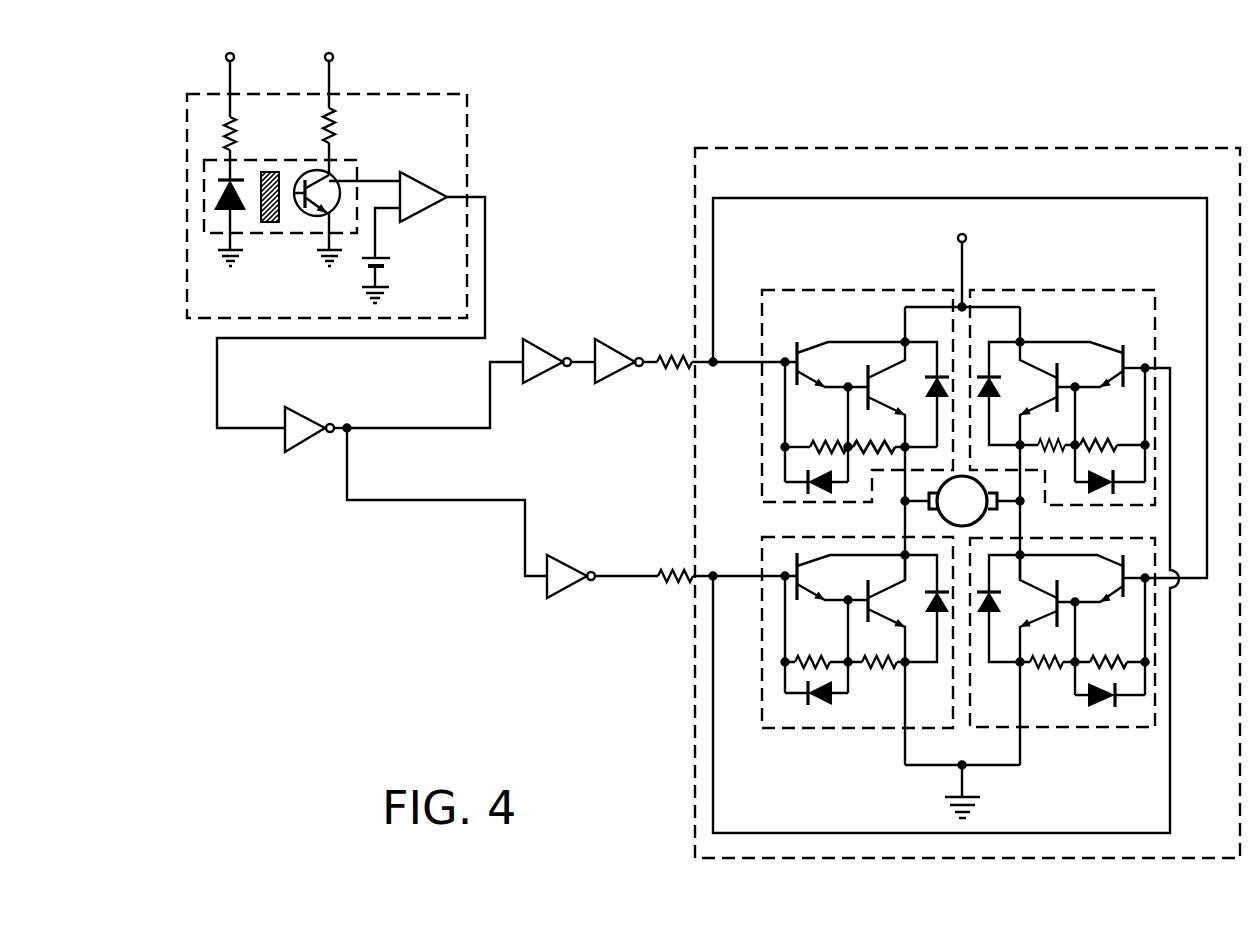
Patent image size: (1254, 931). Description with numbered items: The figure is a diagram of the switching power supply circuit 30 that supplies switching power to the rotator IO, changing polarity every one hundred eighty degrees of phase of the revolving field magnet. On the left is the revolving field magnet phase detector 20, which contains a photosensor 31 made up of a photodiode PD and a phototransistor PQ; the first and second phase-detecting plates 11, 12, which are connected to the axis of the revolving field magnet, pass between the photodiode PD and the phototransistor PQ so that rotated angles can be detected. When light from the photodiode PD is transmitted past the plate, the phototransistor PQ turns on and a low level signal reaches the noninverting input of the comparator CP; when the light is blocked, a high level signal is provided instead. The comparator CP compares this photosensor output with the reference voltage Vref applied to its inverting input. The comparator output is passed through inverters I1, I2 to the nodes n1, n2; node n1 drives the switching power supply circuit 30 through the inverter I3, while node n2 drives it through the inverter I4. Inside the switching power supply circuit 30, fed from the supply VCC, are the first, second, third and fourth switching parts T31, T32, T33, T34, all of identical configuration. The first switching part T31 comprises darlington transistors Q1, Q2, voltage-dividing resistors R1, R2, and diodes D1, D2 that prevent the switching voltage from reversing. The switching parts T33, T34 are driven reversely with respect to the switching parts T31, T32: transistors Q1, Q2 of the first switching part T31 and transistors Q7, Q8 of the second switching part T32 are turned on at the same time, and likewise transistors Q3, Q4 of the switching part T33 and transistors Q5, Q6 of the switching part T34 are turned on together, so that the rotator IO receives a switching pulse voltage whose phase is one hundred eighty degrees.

The revolving field magnet phase detector 20 is at (430, 94).
The switching power supply circuit 30 is at (997, 148).
The photosensor 31 is at (357, 160).
The first phase-detecting plate 11 is at (198, 283).
The second phase-detecting plate 12 is at (268, 222).
The photodiode PD is at (229, 144).
The phototransistor PQ is at (315, 163).
The comparator CP is at (390, 232).
The reference voltage Vref is at (401, 284).
The inverter I1 is at (311, 414).
The inverter I2 is at (559, 347).
The inverter I3 is at (626, 347).
The inverter I4 is at (602, 561).
The node n1 is at (582, 364).
The node n2 is at (524, 546).
The supply voltage VCC is at (965, 255).
The rotator IO is at (962, 501).
The first switching part T31 is at (807, 290).
The second switching part T32 is at (1112, 727).
The third switching part T33 is at (1105, 290).
The fourth switching part T34 is at (820, 728).
The darlington transistor Q1 is at (867, 346).
The darlington transistor Q2 is at (887, 373).
The transistor Q3 is at (1067, 349).
The transistor Q4 is at (1028, 383).
The transistor Q5 is at (895, 660).
The transistor Q6 is at (867, 578).
The transistor Q7 is at (1031, 660).
The transistor Q8 is at (1067, 580).
The voltage-dividing resistor R1 is at (816, 435).
The voltage-dividing resistor R2 is at (892, 435).
The diode D1 is at (816, 502).
The diode D2 is at (934, 412).